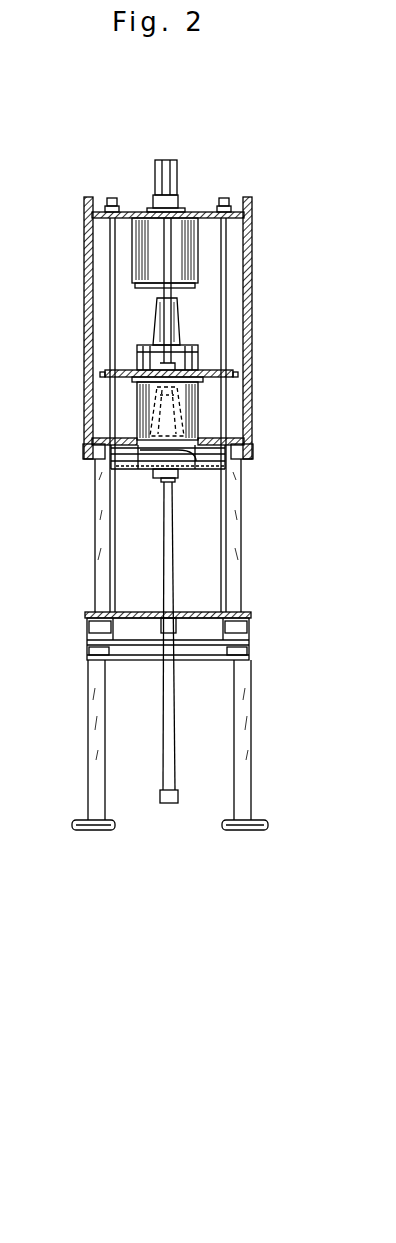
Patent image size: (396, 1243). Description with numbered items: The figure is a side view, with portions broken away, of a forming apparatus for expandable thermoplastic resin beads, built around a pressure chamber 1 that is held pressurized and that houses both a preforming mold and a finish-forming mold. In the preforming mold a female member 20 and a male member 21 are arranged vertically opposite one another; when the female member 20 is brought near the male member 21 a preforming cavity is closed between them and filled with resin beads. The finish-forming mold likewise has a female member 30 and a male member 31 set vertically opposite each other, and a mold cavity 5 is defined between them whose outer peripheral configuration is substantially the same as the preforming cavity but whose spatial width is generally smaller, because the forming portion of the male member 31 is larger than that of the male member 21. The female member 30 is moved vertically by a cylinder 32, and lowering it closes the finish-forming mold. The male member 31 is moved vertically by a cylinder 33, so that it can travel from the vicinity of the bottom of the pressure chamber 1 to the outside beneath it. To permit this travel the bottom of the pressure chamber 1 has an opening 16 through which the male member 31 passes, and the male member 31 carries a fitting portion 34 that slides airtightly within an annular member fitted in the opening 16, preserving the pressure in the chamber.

The pressure chamber 1 is at (83, 252).
The mold cavity 5 is at (183, 405).
The opening 16 is at (198, 418).
The female member 20 is at (147, 247).
The male member 21 is at (160, 300).
The female member 30 is at (137, 391).
The male member 31 is at (153, 405).
The cylinder 32 is at (170, 175).
The cylinder 33 is at (177, 692).
The fitting portion 34 is at (188, 470).